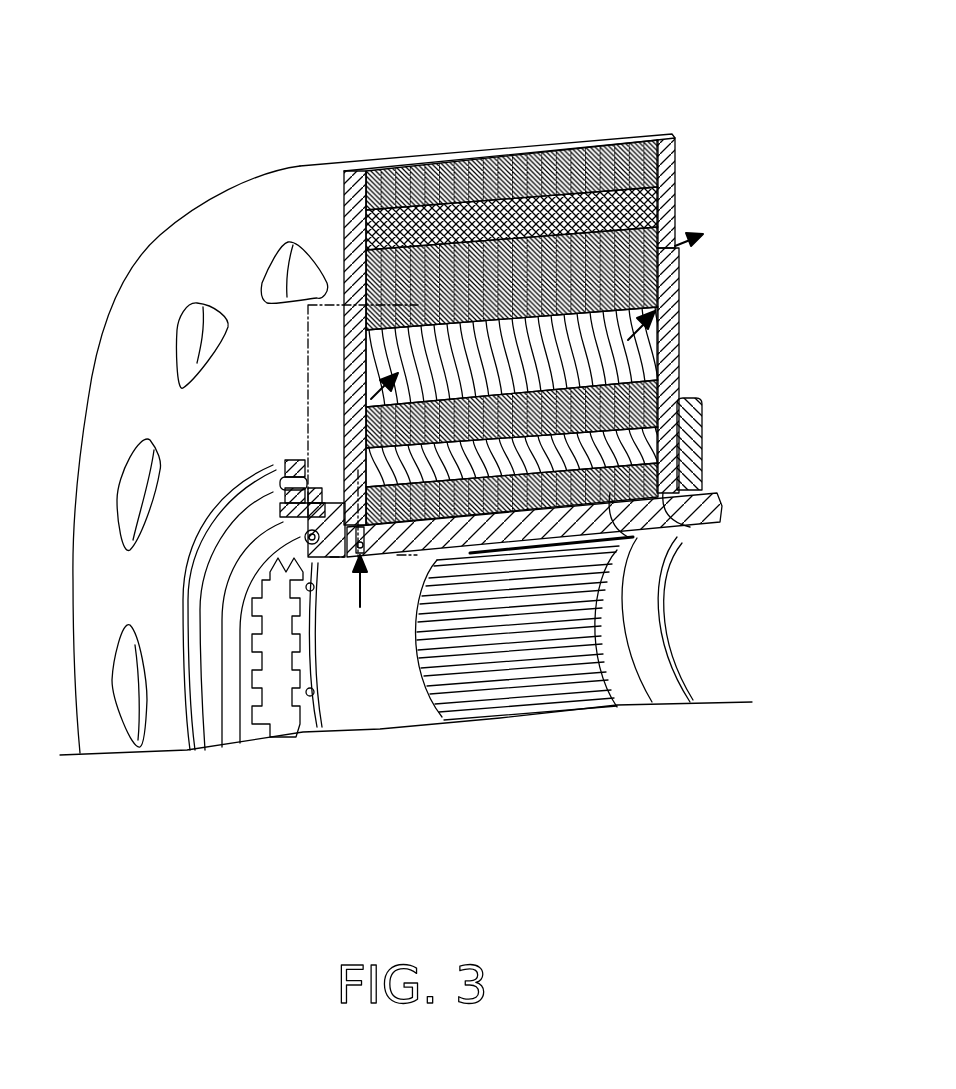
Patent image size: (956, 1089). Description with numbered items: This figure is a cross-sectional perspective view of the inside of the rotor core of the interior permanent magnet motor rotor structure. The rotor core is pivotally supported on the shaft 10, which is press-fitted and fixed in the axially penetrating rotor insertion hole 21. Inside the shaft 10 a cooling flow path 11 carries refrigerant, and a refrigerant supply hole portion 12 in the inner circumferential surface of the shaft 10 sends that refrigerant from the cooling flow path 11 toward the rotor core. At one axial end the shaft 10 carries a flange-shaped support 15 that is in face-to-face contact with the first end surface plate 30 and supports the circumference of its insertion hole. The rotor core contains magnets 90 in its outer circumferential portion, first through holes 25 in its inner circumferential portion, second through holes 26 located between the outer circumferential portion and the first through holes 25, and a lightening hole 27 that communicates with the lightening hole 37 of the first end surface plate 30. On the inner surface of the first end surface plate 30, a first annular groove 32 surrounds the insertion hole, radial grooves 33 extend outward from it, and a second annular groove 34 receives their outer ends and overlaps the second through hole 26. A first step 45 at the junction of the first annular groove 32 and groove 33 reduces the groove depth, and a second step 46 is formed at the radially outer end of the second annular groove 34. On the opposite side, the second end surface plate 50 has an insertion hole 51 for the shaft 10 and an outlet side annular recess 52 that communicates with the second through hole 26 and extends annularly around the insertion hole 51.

The shaft 10 is at (710, 510).
The cooling flow path 11 is at (395, 673).
The refrigerant supply hole portion 12 is at (310, 698).
The support 15 is at (303, 523).
The rotor insertion hole 21 is at (655, 545).
The first through hole 25 is at (605, 455).
The second through hole 26 is at (613, 365).
The lightening hole 27 is at (290, 268).
The first end surface plate 30 is at (363, 170).
The first annular groove 32 is at (340, 520).
The groove 33 is at (362, 500).
The second annular groove 34 is at (358, 452).
The lightening hole 37 is at (272, 262).
The first step 45 is at (350, 480).
The second step 46 is at (362, 403).
The second end surface plate 50 is at (668, 163).
The insertion hole 51 is at (632, 538).
The outlet side annular recess 52 is at (675, 278).
The magnet 90 is at (374, 175).